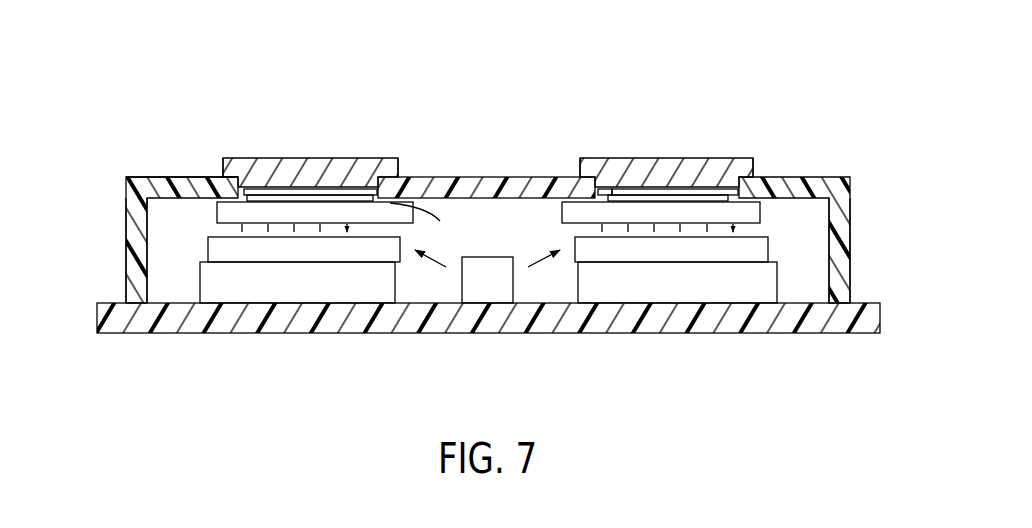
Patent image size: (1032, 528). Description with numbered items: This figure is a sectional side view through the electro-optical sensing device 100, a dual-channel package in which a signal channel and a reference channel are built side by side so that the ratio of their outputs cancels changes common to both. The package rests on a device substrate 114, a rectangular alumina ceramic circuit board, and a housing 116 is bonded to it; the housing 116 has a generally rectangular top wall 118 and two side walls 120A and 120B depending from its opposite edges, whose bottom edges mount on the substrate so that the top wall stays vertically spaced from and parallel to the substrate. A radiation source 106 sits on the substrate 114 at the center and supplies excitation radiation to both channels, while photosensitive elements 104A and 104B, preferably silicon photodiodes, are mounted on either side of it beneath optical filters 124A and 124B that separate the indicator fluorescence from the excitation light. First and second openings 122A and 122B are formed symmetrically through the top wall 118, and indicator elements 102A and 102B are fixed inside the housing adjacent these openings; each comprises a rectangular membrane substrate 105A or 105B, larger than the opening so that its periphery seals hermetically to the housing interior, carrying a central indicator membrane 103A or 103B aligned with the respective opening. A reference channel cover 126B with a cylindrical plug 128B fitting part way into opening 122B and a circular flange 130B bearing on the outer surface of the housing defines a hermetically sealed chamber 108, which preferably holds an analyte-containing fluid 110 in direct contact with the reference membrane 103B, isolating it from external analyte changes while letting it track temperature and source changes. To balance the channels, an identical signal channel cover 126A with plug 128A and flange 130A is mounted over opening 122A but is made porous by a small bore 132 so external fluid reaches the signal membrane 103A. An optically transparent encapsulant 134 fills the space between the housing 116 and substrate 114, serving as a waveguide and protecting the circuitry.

The electro-optical sensing device 100 is at (781, 67).
The indicator element of the signal channel 102A is at (206, 211).
The indicator element of the reference channel 102B is at (771, 208).
The indicator membrane of the signal channel 103A is at (313, 194).
The indicator membrane of the reference channel 103B is at (660, 194).
The photosensitive element of the signal channel 104A is at (200, 268).
The photosensitive element of the reference channel 104B is at (778, 280).
The membrane substrate of the signal channel 105A is at (220, 223).
The membrane substrate of the reference channel 105B is at (753, 223).
The radiation source 106 is at (477, 293).
The hermetically sealed chamber 108 is at (599, 188).
The analyte-containing fluid 110 is at (722, 188).
The device substrate 114 is at (143, 334).
The housing 116 is at (175, 175).
The top wall 118 is at (507, 177).
The first side wall 120A is at (127, 203).
The second side wall 120B is at (850, 203).
The first opening 122A is at (243, 175).
The second opening 122B is at (735, 180).
The optical filter of the signal channel 124A is at (207, 243).
The optical filter of the reference channel 124B is at (768, 246).
The signal channel cover 126A is at (368, 152).
The reference channel cover 126B is at (676, 152).
The plug of the signal channel cover 128A is at (425, 227).
The plug of the reference channel cover 128B is at (567, 204).
The flange of the signal channel cover 130A is at (396, 176).
The flange of the reference channel cover 130B is at (584, 176).
The bore 132 is at (297, 169).
The encapsulant 134 is at (436, 287).